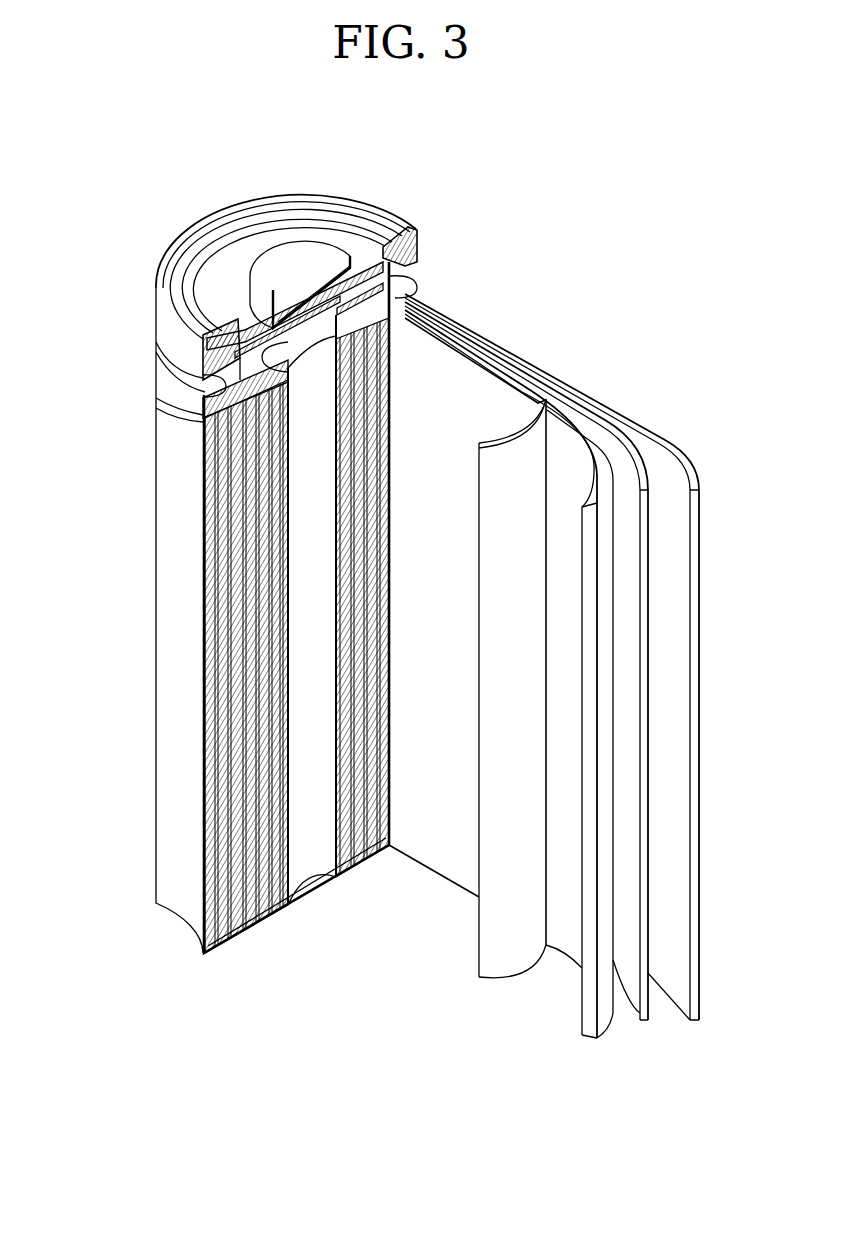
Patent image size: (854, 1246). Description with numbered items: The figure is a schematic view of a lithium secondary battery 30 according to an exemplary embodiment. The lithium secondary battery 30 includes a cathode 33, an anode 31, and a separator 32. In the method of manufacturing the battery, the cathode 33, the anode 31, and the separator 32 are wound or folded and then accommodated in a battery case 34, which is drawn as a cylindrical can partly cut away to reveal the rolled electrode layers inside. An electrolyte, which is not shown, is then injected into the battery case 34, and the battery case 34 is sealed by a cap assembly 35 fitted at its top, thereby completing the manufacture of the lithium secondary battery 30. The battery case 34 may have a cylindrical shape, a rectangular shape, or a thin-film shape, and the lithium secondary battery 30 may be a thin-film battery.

The lithium secondary battery 30 is at (652, 227).
The anode 31 is at (685, 468).
The separator 32 is at (630, 442).
The cathode 33 is at (572, 423).
The battery case 34 is at (172, 628).
The cap assembly 35 is at (282, 243).